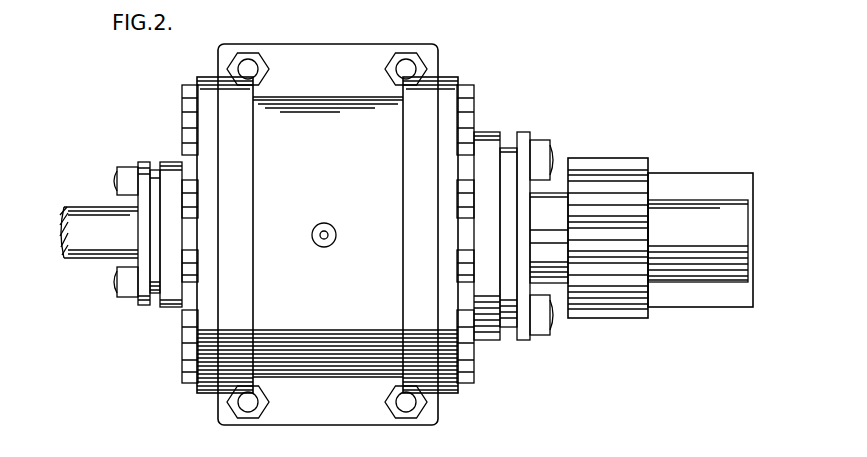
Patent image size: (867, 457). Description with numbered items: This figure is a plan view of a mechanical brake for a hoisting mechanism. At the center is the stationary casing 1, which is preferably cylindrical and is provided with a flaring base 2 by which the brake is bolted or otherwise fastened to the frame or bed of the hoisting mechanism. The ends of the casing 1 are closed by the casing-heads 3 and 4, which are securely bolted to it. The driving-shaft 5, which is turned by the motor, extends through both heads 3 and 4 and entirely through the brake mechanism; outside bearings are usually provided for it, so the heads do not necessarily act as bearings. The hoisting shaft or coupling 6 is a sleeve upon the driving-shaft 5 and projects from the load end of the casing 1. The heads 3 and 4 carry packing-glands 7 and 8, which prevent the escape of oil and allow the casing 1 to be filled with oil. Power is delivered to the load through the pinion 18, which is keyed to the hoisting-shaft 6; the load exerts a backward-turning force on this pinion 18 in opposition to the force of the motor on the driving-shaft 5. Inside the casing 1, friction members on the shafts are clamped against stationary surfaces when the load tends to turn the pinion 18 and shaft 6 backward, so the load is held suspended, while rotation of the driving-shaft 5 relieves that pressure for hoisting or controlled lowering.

The stationary casing 1 is at (315, 113).
The flaring base 2 is at (326, 51).
The casing-head 3 is at (197, 78).
The casing-head 4 is at (452, 81).
The driving-shaft 5 is at (82, 213).
The hoisting-shaft or coupling 6 is at (550, 194).
The packing-gland 7 is at (150, 164).
The packing-gland 8 is at (525, 137).
The pinion 18 is at (620, 160).